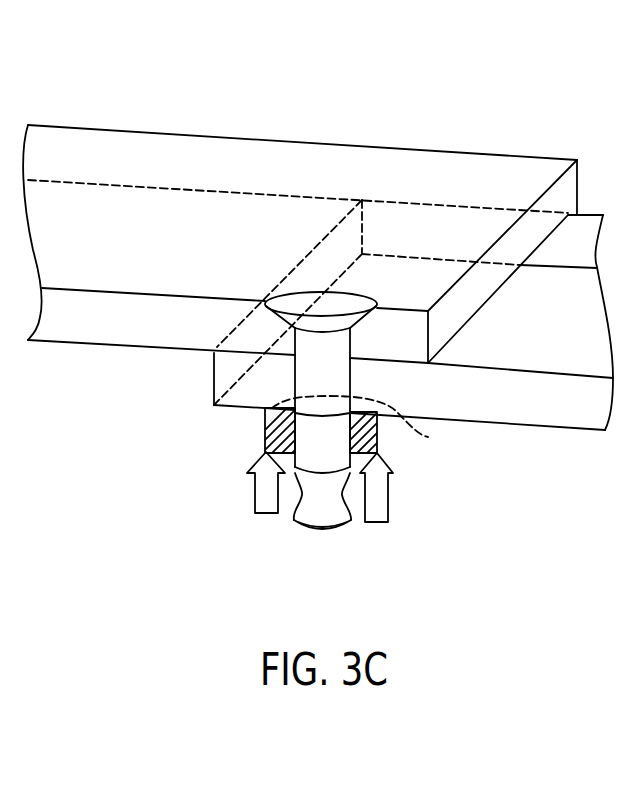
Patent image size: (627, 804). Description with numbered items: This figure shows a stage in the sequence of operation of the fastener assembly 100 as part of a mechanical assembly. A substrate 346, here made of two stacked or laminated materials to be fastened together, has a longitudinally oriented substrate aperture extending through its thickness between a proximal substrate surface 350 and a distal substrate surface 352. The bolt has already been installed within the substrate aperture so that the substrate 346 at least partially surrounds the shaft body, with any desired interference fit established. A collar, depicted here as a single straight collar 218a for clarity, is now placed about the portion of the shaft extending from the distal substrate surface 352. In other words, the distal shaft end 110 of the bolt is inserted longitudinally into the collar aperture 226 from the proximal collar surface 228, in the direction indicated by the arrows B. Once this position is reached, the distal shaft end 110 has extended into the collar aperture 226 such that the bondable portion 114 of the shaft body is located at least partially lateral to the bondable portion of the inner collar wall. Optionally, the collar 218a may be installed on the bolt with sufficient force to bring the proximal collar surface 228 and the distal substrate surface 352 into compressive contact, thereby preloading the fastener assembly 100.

The fastener assembly 100 is at (315, 451).
The distal shaft end 110 is at (284, 516).
The bondable portion 114 is at (322, 440).
The straight collar 218a is at (329, 455).
The collar aperture 226 is at (293, 443).
The proximal collar surface 228 is at (363, 425).
The substrate 346 is at (300, 230).
The proximal substrate surface 350 is at (183, 267).
The distal substrate surface 352 is at (513, 427).
The arrows B is at (255, 502).